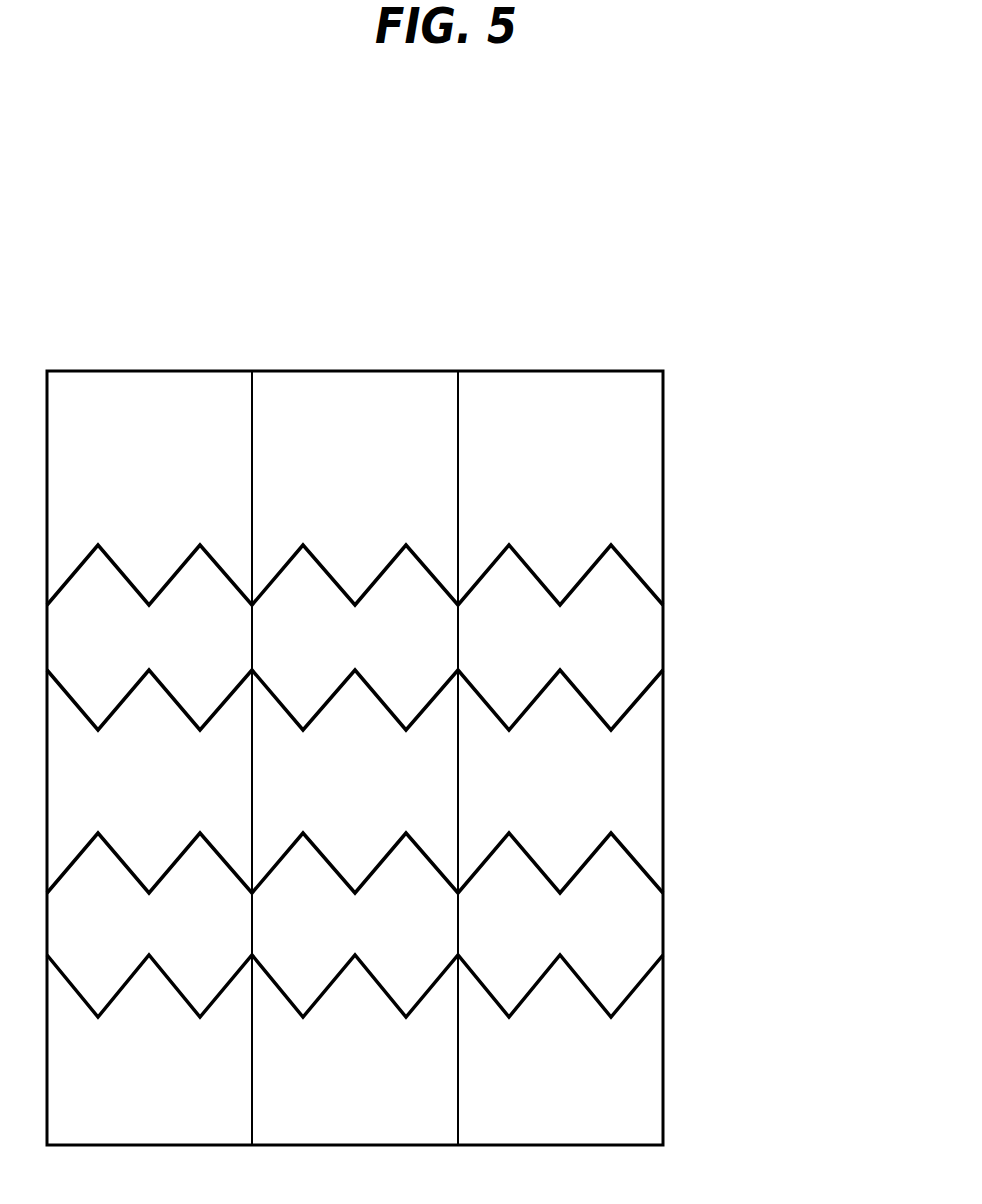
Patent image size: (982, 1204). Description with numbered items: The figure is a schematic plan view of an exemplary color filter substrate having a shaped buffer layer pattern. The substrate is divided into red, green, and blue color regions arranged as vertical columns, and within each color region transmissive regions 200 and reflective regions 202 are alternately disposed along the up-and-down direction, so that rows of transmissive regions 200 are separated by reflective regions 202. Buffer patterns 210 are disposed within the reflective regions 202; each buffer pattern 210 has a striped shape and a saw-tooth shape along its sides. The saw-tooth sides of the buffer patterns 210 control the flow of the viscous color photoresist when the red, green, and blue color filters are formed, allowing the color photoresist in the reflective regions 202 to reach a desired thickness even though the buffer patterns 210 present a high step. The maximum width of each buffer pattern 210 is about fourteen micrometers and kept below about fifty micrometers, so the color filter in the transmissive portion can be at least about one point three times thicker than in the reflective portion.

The transmissive region 200 is at (625, 475).
The buffer pattern 210 is at (637, 574).
The reflective region 202 is at (625, 635).